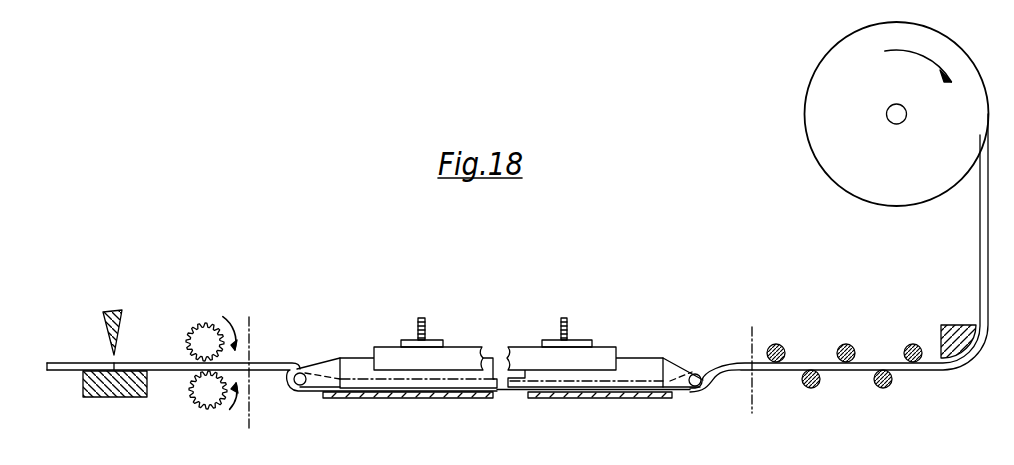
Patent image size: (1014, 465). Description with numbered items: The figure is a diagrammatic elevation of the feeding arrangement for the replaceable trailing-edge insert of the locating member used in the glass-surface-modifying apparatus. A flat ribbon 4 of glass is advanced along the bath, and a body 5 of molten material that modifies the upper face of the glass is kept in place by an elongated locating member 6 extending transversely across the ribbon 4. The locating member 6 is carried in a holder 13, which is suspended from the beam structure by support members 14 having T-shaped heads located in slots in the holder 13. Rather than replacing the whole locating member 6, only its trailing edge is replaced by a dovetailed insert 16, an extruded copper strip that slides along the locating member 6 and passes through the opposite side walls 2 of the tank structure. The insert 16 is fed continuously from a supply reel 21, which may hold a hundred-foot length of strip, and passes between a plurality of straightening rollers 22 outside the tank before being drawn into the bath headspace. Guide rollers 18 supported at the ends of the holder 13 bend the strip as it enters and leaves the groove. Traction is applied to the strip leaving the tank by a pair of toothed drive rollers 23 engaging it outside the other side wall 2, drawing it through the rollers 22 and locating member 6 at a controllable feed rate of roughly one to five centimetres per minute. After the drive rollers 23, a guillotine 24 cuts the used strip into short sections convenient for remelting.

The side wall 2 is at (249, 413).
The ribbon 4 is at (588, 394).
The body of molten material 5 is at (550, 393).
The locating member 6 is at (643, 364).
The holder 13 is at (600, 351).
The support member 14 is at (417, 326).
The insert 16 is at (295, 364).
The guide roller 18 is at (300, 388).
The supply reel 21 is at (828, 153).
The straightening rollers 22 is at (840, 349).
The toothed drive rollers 23 is at (194, 377).
The guillotine 24 is at (113, 353).